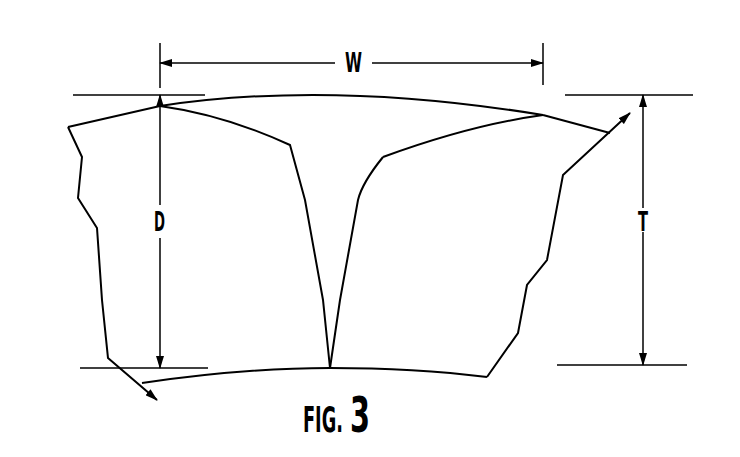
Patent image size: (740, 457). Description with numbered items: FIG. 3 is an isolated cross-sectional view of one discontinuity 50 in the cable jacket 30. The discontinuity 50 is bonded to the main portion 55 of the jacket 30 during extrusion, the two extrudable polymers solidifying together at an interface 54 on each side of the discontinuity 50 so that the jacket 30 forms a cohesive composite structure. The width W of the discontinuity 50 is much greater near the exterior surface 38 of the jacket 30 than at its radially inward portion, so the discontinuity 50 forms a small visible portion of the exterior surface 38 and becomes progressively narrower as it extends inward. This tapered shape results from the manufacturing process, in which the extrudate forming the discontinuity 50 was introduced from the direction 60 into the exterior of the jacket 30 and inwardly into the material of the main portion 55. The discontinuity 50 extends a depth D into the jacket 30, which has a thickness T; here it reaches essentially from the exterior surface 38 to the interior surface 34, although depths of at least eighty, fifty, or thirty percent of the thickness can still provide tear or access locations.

The jacket 30 is at (455, 378).
The interior surface 34 is at (183, 360).
The exterior surface 38 is at (83, 125).
The discontinuity 50 is at (412, 125).
The interface 54 is at (305, 200).
The main portion of the jacket 55 is at (422, 332).
The direction 60 is at (212, 50).